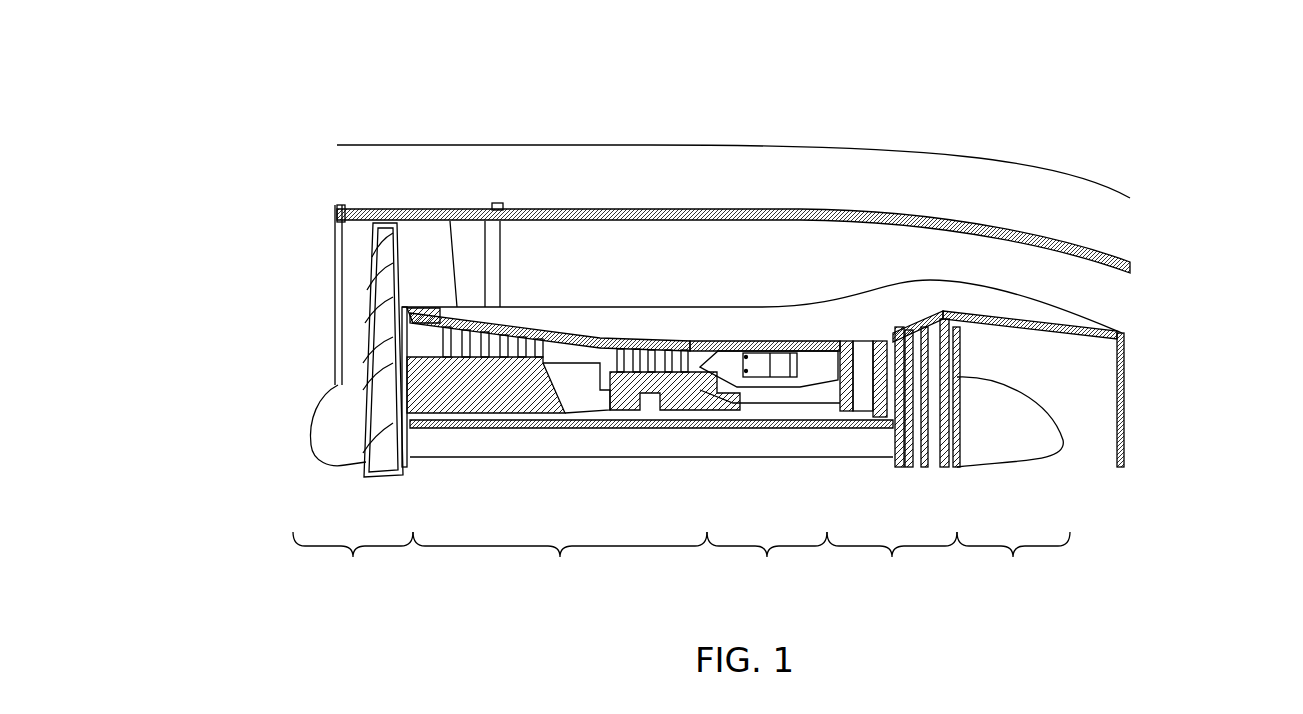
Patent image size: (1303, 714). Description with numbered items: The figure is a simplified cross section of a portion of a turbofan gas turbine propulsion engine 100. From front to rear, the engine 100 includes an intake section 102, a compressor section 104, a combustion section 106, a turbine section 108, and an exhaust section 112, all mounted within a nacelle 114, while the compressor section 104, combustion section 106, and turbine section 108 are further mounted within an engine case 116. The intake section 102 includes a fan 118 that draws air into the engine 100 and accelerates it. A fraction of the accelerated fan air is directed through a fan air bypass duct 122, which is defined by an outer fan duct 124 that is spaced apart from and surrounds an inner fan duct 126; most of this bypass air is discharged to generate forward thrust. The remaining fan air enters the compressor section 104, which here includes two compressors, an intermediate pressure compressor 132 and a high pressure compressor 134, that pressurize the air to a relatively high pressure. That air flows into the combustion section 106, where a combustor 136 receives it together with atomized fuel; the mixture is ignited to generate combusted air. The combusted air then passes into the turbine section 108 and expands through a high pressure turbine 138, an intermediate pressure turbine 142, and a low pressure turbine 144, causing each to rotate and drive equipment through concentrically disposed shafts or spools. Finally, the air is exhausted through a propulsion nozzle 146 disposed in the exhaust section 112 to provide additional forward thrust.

The turbofan gas turbine propulsion engine 100 is at (538, 132).
The intake section 102 is at (353, 561).
The compressor section 104 is at (560, 561).
The combustion section 106 is at (767, 561).
The turbine section 108 is at (892, 561).
The exhaust section 112 is at (1013, 484).
The nacelle 114 is at (1002, 153).
The engine case 116 is at (424, 307).
The fan 118 is at (366, 312).
The fan air bypass duct 122 is at (578, 277).
The outer fan duct 124 is at (428, 209).
The inner fan duct 126 is at (727, 307).
The intermediate pressure compressor 132 is at (507, 412).
The high pressure compressor 134 is at (661, 388).
The combustor 136 is at (800, 357).
The high pressure turbine 138 is at (843, 340).
The intermediate pressure turbine 142 is at (908, 342).
The low pressure turbine 144 is at (944, 334).
The propulsion nozzle 146 is at (1107, 392).